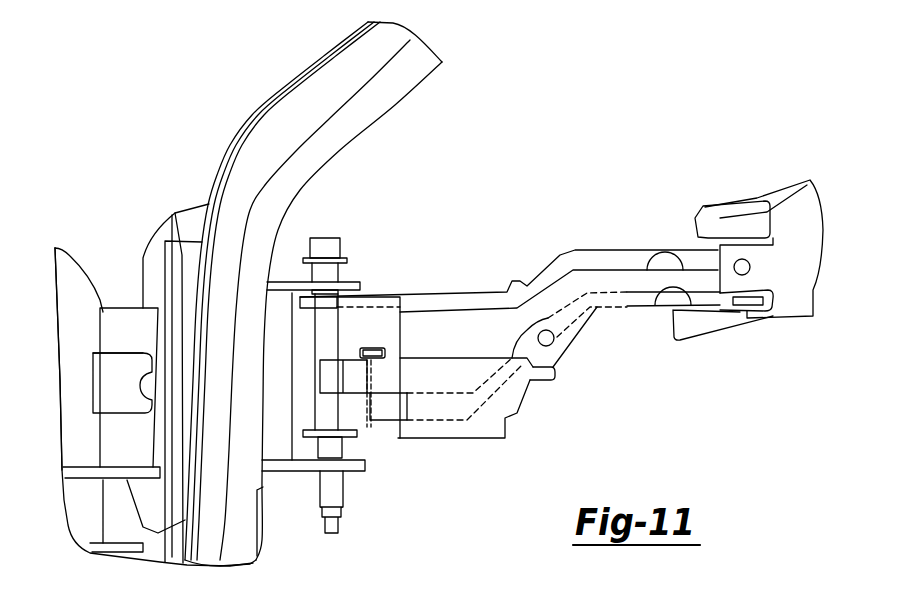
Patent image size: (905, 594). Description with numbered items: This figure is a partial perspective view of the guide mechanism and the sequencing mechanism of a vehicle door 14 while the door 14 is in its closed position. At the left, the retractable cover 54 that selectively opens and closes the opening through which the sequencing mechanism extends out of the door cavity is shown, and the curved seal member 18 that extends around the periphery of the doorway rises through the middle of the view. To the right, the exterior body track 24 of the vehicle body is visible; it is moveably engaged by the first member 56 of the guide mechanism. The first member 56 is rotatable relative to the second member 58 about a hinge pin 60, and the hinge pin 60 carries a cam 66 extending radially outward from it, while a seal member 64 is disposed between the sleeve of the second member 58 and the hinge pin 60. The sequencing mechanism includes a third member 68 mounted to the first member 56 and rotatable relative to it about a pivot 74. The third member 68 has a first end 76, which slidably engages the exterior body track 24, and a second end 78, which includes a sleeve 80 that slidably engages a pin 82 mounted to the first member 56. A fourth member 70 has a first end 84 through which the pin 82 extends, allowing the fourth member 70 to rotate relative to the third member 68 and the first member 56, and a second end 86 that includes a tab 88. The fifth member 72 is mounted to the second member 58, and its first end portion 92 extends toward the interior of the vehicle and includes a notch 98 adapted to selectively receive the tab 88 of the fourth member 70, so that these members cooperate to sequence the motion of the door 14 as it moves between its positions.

The door 14 is at (68, 512).
The seal member 18 is at (262, 112).
The exterior body track 24 is at (752, 190).
The retractable cover 54 is at (61, 260).
The first member 56 is at (612, 250).
The second member 58 is at (287, 281).
The hinge pin 60 is at (335, 317).
The seal member 64 is at (172, 213).
The cam 66 is at (332, 378).
The third member 68 is at (580, 297).
The fourth member 70 is at (470, 360).
The fifth member 72 is at (118, 362).
The pivot 74 is at (554, 338).
The first end 76 is at (718, 300).
The second end 78 is at (383, 413).
The sleeve 80 is at (365, 410).
The pin 82 is at (375, 373).
The first end 84 is at (358, 352).
The second end 86 is at (520, 382).
The tab 88 is at (556, 372).
The first end portion 92 is at (132, 308).
The notch 98 is at (133, 388).